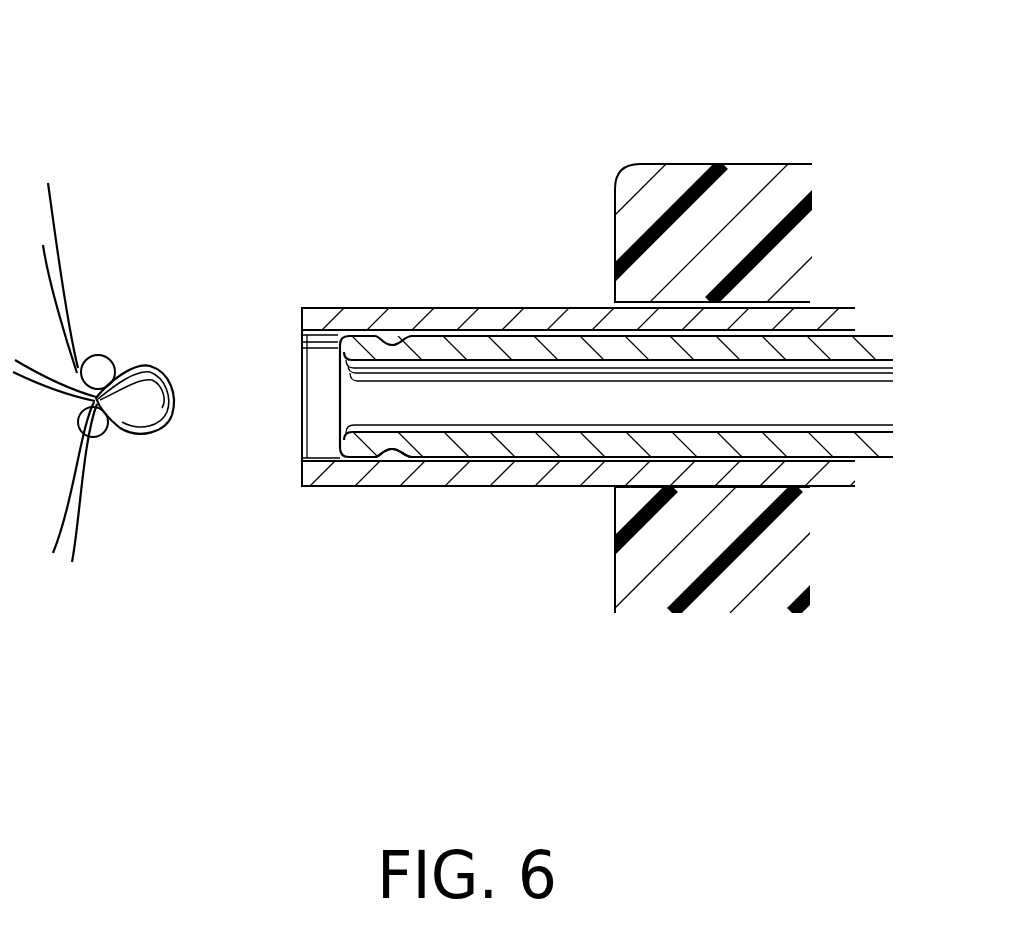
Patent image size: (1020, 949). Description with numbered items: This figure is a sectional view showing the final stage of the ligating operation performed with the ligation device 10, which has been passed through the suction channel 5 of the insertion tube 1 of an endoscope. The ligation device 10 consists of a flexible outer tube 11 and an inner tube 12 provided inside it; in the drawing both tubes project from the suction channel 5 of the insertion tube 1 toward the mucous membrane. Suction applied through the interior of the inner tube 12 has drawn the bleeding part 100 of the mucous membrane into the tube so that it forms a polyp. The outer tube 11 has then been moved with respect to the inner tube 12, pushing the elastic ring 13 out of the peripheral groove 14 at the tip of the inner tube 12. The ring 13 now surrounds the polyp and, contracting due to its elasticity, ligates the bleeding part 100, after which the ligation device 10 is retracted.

The insertion tube 1 is at (779, 165).
The suction channel 5 is at (685, 302).
The ligation device 10 is at (613, 353).
The outer tube 11 is at (367, 308).
The inner tube 12 is at (510, 348).
The ring 13 is at (107, 357).
The peripheral groove 14 is at (393, 456).
The bleeding part 100 is at (137, 428).